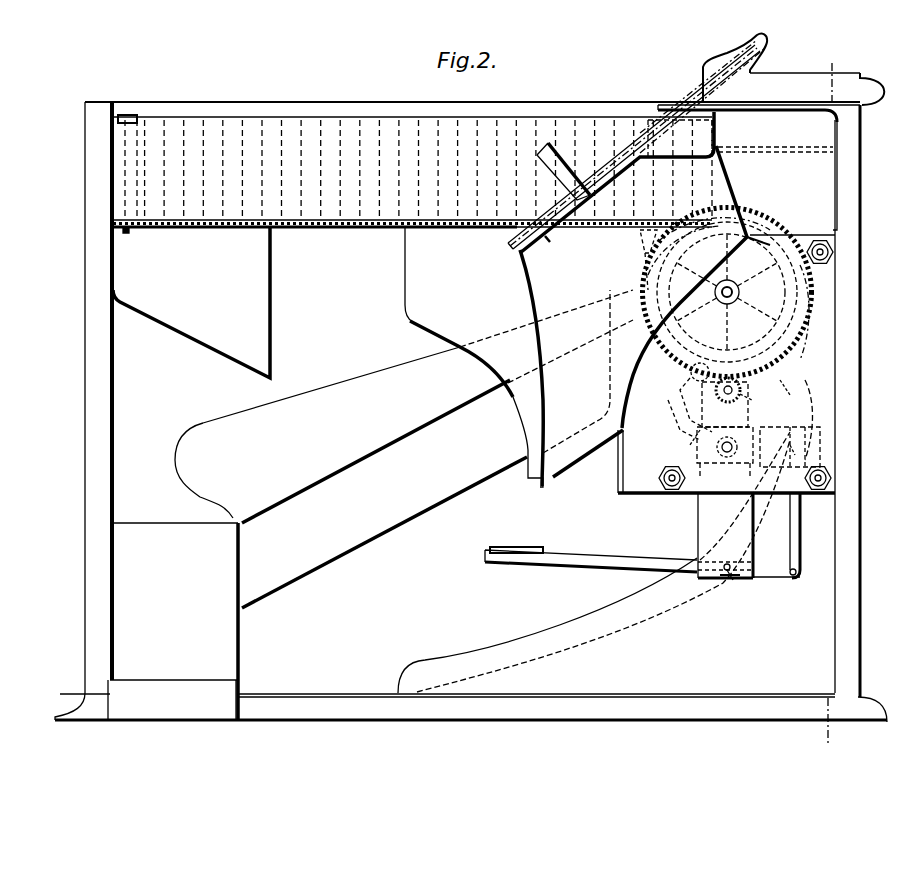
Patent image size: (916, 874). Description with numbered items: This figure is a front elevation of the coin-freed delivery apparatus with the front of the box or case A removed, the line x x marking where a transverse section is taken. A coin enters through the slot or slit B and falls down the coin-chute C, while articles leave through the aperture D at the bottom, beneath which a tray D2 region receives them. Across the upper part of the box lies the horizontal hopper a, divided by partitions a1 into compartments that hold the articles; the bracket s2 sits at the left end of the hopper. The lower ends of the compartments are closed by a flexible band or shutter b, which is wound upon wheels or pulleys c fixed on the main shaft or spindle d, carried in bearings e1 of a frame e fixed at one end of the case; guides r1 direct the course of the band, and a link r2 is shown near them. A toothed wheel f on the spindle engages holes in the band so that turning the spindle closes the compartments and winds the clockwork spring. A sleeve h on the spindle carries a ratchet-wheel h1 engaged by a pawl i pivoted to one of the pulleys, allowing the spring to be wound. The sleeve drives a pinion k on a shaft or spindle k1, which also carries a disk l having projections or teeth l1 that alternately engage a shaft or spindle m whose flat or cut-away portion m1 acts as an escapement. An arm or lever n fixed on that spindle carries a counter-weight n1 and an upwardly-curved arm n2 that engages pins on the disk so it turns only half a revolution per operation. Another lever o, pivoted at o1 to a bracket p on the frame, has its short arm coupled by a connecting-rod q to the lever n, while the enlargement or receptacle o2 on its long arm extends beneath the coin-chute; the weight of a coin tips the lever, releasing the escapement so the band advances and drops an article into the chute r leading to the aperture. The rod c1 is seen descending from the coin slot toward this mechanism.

The box or case A is at (471, 397).
The slot or slit B is at (709, 90).
The coin-chute C is at (519, 357).
The aperture D is at (174, 621).
The base plate D2 is at (172, 700).
The hopper a is at (412, 173).
The partitions a1 is at (270, 170).
The bracket s2 is at (125, 120).
The flexible band or shutter b is at (315, 302).
The wheels or pulleys c is at (614, 170).
The connecting rod c1 is at (505, 252).
The shaft or spindle d is at (727, 292).
The frame e is at (694, 364).
The bearings e1 is at (684, 420).
The toothed wheel f is at (808, 320).
The sleeve h is at (685, 287).
The ratchet-wheel h1 is at (758, 244).
The pawl i is at (648, 260).
The pinion k is at (725, 402).
The shaft or spindle k1 is at (746, 403).
The disk l is at (680, 376).
The projections or teeth l1 is at (691, 439).
The shaft or spindle m is at (725, 457).
The flat or cut-away portion m1 is at (733, 447).
The arm or lever n is at (790, 440).
The counter-weight n1 is at (807, 455).
The upwardly-curved arm n2 is at (788, 384).
The lever o is at (619, 535).
The pivot o1 is at (732, 588).
The enlargement or receptacle o2 is at (516, 540).
The bracket p is at (722, 564).
The connecting-rod q is at (785, 535).
The chute r is at (351, 477).
The guides r1 is at (588, 620).
The link r2 is at (813, 415).
The section line x is at (828, 403).